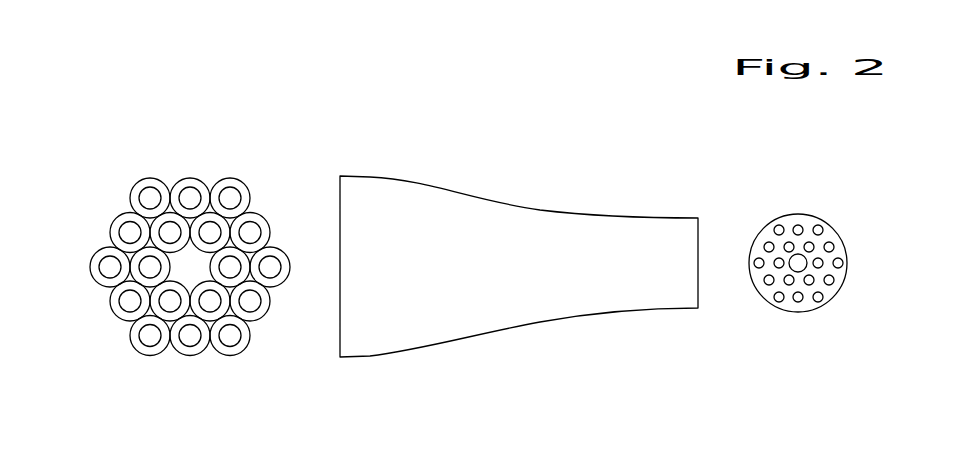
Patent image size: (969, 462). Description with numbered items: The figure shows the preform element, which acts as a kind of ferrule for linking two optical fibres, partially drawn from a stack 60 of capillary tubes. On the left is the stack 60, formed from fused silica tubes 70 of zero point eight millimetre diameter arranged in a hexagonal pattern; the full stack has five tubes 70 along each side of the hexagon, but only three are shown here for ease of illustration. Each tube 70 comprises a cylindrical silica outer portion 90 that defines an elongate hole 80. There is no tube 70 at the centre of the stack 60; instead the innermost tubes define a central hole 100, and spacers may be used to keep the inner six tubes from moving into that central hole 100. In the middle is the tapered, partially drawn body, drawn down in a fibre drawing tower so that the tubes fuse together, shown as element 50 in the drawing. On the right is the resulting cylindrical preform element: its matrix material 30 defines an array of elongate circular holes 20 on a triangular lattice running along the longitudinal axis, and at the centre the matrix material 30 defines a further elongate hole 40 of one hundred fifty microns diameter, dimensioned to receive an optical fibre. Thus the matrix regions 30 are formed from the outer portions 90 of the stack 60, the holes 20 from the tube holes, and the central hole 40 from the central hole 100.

The elongate circular hole 20 is at (818, 230).
The matrix material 30 is at (805, 303).
The central hole 40 is at (807, 263).
The tapered light guide 50 is at (535, 183).
The stack 60 is at (133, 160).
The fused silica tube 70 is at (203, 177).
The elongate hole 80 is at (131, 301).
The silica outer portion 90 is at (125, 315).
The central hole 100 is at (188, 265).